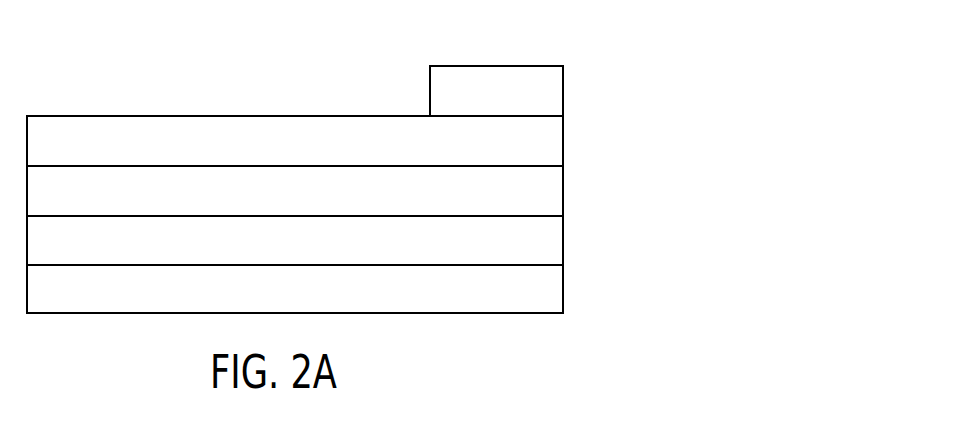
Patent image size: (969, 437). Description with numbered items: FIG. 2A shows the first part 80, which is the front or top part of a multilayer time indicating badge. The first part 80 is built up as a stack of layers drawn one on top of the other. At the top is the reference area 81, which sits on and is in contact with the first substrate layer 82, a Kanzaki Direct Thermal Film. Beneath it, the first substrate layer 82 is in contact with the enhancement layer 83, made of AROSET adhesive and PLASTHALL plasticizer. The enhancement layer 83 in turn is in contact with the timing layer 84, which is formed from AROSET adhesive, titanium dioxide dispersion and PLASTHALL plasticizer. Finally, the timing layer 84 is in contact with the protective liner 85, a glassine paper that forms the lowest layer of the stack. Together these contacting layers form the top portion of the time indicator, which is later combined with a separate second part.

The first part 80 is at (565, 44).
The reference area 81 is at (564, 92).
The first substrate layer 82 is at (564, 141).
The enhancement layer 83 is at (564, 190).
The timing layer 84 is at (564, 240).
The protective liner 85 is at (564, 289).